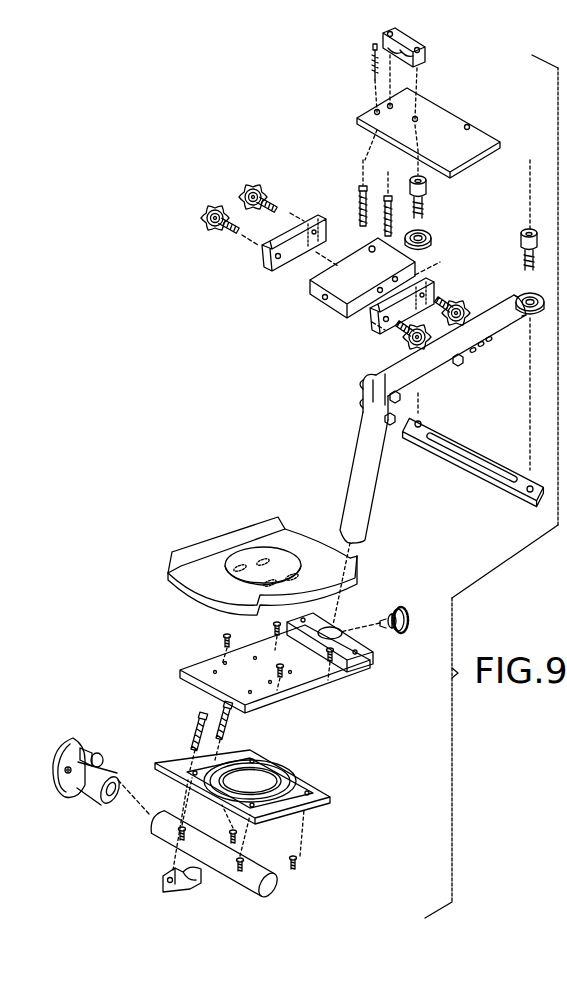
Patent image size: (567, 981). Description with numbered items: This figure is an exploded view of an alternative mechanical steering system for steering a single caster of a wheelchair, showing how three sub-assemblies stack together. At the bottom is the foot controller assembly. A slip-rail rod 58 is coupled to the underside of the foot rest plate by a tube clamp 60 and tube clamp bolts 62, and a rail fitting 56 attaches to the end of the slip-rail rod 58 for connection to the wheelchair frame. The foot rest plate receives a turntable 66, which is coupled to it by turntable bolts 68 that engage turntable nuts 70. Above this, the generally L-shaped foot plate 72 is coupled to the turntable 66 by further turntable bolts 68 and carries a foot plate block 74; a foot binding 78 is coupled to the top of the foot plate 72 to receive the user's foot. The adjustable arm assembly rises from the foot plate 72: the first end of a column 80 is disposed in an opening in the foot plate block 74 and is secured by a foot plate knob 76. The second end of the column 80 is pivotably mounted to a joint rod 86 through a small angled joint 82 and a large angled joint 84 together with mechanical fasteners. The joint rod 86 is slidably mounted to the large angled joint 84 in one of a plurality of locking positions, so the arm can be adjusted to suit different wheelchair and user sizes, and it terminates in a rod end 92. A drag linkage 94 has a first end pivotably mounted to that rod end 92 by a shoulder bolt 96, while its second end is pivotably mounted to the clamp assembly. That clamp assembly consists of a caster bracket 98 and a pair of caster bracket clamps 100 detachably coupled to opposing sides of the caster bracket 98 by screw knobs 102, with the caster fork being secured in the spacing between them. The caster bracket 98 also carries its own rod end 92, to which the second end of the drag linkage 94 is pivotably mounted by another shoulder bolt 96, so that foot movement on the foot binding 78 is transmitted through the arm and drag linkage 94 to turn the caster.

The rail fitting 56 is at (80, 793).
The slip-rail rod 58 is at (257, 893).
The tube clamp 60 is at (177, 893).
The tube clamp bolts 62 is at (357, 208).
The turntable 66 is at (302, 772).
The turntable bolts 68 is at (343, 647).
The turntable nuts 70 is at (192, 777).
The foot plate 72 is at (327, 685).
The foot plate block 74 is at (377, 660).
The foot plate knob 76 is at (402, 608).
The foot binding 78 is at (207, 538).
The column 80 is at (352, 490).
The small angled joint 82 is at (362, 412).
The large angled joint 84 is at (430, 375).
The joint rod 86 is at (502, 330).
The rod end 92 is at (440, 245).
The drag linkage 94 is at (492, 482).
The shoulder bolt 96 is at (428, 193).
The caster bracket 98 is at (318, 292).
The caster bracket clamps 100 is at (262, 266).
The screw knobs 102 is at (450, 300).